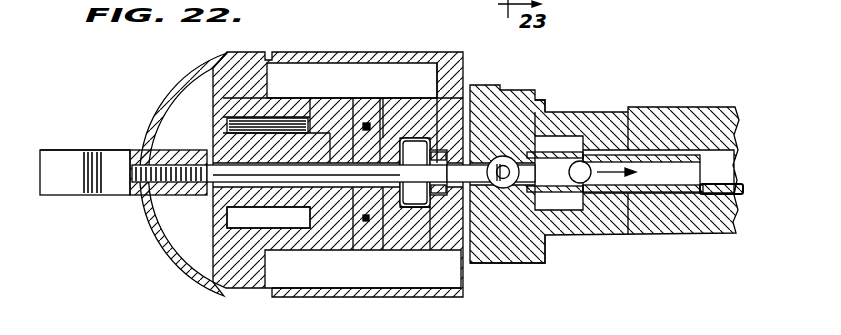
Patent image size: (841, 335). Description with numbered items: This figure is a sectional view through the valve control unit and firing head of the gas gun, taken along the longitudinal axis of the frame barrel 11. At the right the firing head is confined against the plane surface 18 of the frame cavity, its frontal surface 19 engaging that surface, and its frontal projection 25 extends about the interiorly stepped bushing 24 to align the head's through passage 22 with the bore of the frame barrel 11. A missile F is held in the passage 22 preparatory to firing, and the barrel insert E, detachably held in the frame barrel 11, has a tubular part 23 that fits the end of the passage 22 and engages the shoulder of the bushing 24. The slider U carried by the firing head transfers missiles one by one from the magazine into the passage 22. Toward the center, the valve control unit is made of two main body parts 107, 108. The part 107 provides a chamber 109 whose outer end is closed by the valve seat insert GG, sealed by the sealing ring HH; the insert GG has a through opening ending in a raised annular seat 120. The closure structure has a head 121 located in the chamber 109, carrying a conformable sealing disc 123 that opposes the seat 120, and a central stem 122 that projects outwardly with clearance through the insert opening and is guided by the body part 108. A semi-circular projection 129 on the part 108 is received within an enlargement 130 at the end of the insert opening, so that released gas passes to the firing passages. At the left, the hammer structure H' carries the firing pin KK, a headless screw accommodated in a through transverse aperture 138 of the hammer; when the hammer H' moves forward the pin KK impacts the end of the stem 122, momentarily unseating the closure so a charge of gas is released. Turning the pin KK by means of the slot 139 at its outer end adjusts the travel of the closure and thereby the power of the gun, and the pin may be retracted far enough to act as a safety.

The frame barrel 11 is at (718, 122).
The plane surface 18 is at (542, 107).
The frontal surface 19 is at (538, 244).
The through passage 22 is at (647, 173).
The tubular part 23 is at (722, 168).
The interiorly stepped bushing 24 is at (556, 151).
The frontal projection 25 is at (513, 100).
The valve body part 107 is at (465, 98).
The valve body part 108 is at (260, 108).
The chamber 109 is at (427, 137).
The raised annular seat 120 is at (387, 157).
The head 121 is at (462, 253).
The central stem 122 is at (240, 172).
The conformable sealing disc 123 is at (400, 195).
The semi-circular projection 129 is at (348, 147).
The enlargement 130 is at (353, 200).
The through transverse aperture 138 is at (175, 177).
The slot 139 is at (137, 174).
The barrel insert E is at (717, 195).
The missile F is at (617, 157).
The valve seat insert GG is at (354, 220).
The sealing ring HH is at (367, 126).
The firing pin KK is at (192, 170).
The slider U is at (505, 192).
The hammer structure H' is at (85, 136).